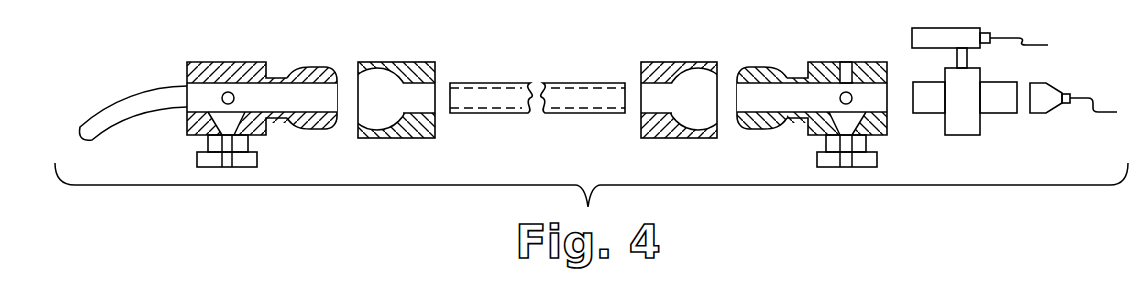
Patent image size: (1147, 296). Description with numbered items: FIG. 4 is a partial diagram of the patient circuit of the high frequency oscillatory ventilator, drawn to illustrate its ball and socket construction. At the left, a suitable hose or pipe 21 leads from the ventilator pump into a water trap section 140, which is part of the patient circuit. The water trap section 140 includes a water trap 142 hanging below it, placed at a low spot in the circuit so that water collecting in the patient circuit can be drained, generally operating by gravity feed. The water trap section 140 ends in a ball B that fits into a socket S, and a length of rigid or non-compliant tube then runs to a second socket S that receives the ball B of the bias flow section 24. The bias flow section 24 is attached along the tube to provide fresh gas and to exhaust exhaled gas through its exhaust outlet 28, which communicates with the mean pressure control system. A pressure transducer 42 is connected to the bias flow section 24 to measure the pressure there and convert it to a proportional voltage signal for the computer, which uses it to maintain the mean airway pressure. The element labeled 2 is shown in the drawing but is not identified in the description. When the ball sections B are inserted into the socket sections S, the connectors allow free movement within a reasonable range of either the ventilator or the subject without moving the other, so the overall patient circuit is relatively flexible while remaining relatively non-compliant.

The hose or pipe 21 is at (119, 100).
The water trap section 140 is at (487, 83).
The water trap 142 is at (253, 158).
The ball B is at (315, 69).
The socket S is at (395, 69).
The port 2 is at (833, 102).
The pressure transducer 42 is at (839, 94).
The exhaust outlet 28 is at (822, 145).
The bias flow section 24 is at (887, 122).